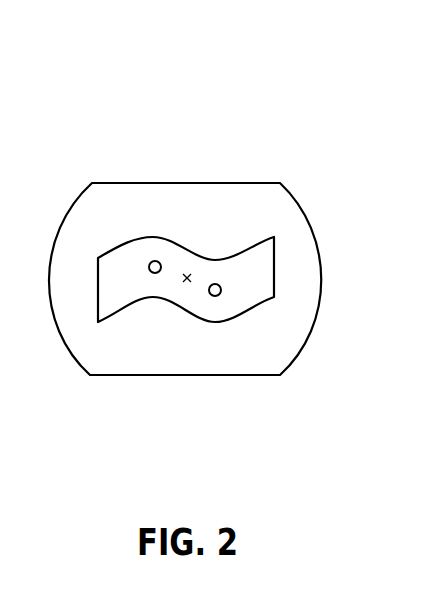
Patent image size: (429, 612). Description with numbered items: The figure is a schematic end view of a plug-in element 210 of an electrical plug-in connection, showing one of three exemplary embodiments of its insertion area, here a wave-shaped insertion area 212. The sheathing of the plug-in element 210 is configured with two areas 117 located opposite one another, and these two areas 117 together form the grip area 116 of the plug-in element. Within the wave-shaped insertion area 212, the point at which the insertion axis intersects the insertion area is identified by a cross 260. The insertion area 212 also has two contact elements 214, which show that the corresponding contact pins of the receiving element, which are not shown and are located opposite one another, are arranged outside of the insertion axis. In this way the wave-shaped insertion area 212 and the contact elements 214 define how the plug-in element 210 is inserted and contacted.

The plug-in element 210 is at (318, 152).
The wave-shaped insertion area 212 is at (113, 230).
The contact elements 214 is at (153, 273).
The cross 260 is at (186, 272).
The grip area 116 is at (190, 175).
The areas located opposite one another 117 is at (243, 183).